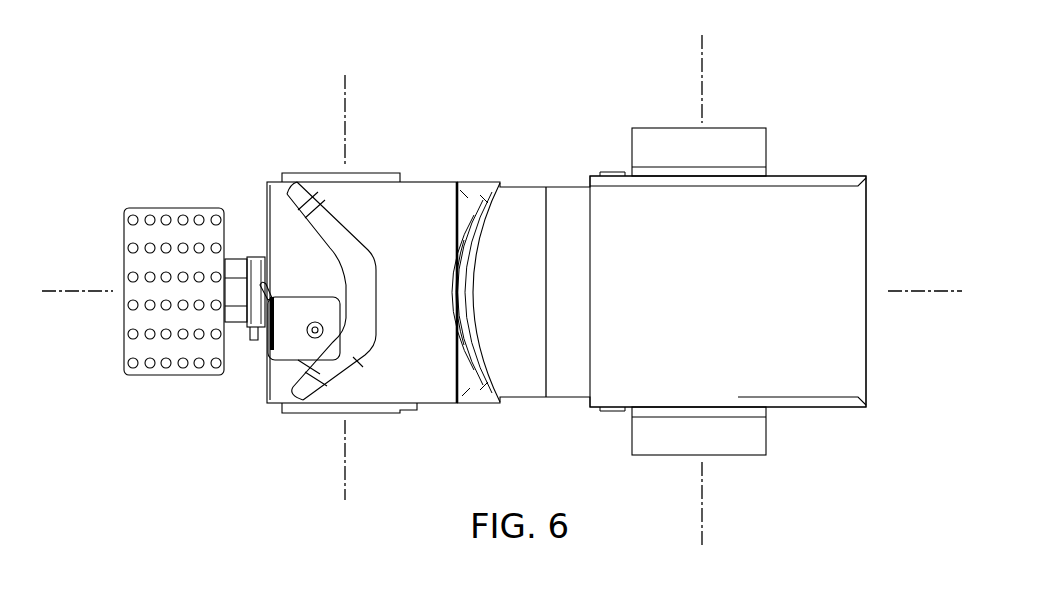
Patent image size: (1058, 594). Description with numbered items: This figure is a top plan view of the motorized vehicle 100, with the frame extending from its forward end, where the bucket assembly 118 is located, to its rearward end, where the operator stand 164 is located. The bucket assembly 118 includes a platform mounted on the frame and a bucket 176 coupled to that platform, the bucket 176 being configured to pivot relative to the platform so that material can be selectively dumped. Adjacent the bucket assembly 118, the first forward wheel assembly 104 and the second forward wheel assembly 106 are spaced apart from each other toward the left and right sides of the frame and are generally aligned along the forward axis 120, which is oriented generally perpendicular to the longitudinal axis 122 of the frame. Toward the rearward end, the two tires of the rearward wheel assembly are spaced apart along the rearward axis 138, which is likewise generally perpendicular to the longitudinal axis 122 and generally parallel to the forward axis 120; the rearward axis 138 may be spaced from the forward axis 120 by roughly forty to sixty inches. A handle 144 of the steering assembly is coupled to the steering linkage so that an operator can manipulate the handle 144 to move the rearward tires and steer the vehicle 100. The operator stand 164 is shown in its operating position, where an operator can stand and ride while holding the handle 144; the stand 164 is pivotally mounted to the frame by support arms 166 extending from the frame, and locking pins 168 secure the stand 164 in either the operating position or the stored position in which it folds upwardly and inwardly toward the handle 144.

The vehicle 100 is at (140, 116).
The first forward wheel assembly 104 is at (760, 130).
The second forward wheel assembly 106 is at (760, 461).
The bucket assembly 118 is at (849, 167).
The forward axis 120 is at (700, 68).
The longitudinal axis 122 is at (918, 295).
The rearward axis 138 is at (345, 88).
The handle 144 is at (362, 262).
The operator stand 164 is at (145, 377).
The support arms 166 is at (236, 257).
The locking pins 168 is at (250, 255).
The bucket 176 is at (729, 304).